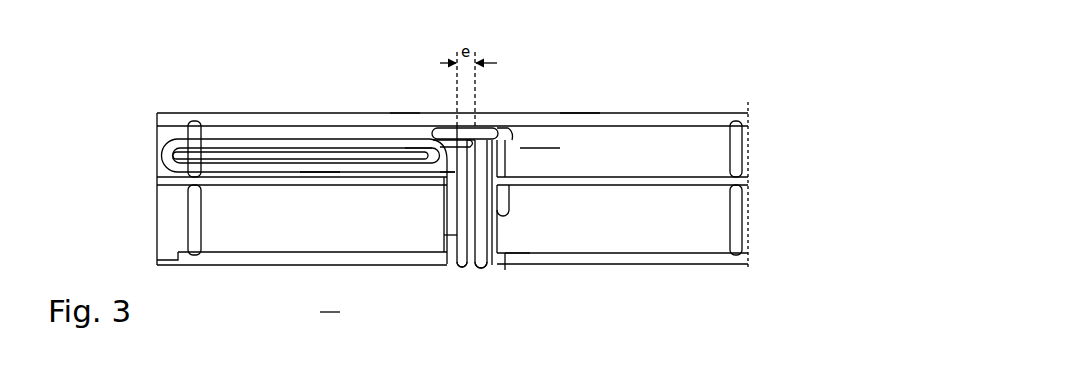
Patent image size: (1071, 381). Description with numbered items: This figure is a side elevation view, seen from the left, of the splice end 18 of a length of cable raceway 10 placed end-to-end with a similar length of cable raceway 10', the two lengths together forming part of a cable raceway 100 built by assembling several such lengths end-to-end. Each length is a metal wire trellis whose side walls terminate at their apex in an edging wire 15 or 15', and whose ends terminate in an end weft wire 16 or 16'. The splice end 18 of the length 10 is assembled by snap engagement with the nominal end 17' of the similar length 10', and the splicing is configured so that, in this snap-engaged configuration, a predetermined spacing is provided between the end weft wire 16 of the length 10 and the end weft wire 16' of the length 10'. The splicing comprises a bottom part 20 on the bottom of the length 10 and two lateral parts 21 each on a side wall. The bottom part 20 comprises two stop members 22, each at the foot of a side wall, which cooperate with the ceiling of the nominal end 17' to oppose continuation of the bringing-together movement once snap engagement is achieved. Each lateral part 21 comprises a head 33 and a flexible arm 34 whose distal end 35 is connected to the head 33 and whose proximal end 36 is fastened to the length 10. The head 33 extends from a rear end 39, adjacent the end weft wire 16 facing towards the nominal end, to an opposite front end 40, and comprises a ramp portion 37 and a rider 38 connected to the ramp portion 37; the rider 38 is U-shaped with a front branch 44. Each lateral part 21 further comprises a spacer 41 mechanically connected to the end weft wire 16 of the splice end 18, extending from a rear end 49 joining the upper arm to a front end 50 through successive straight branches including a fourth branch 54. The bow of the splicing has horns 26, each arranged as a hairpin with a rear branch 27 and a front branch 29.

The length of cable raceway 10 is at (302, 132).
The similar length of cable raceway 10' is at (638, 155).
The edging wire 15 is at (299, 103).
The edging wire of similar length 15' is at (581, 79).
The end weft wire 16 is at (416, 240).
The end weft wire of similar length 16' is at (517, 231).
The nominal end of similar length 17' is at (452, 66).
The splice end 18 is at (398, 66).
The bottom part 20 is at (326, 313).
The lateral part 21 is at (298, 126).
The stop member 22 is at (507, 270).
The horn 26 is at (516, 251).
The rear branch 27 is at (463, 265).
The front branch 29 is at (487, 268).
The head 33 is at (538, 148).
The flexible arm 34 is at (316, 170).
The distal end 35 is at (450, 173).
The proximal end 36 is at (210, 165).
The ramp portion 37 is at (512, 172).
The rider 38 is at (455, 124).
The rear end 39 is at (430, 156).
The front end 40 is at (512, 203).
The spacer 41 is at (452, 263).
The front branch 44 is at (507, 125).
The rear end 49 is at (452, 162).
The front end 50 is at (503, 137).
The fourth branch 54 is at (505, 184).
The cable raceway 100 is at (511, 41).